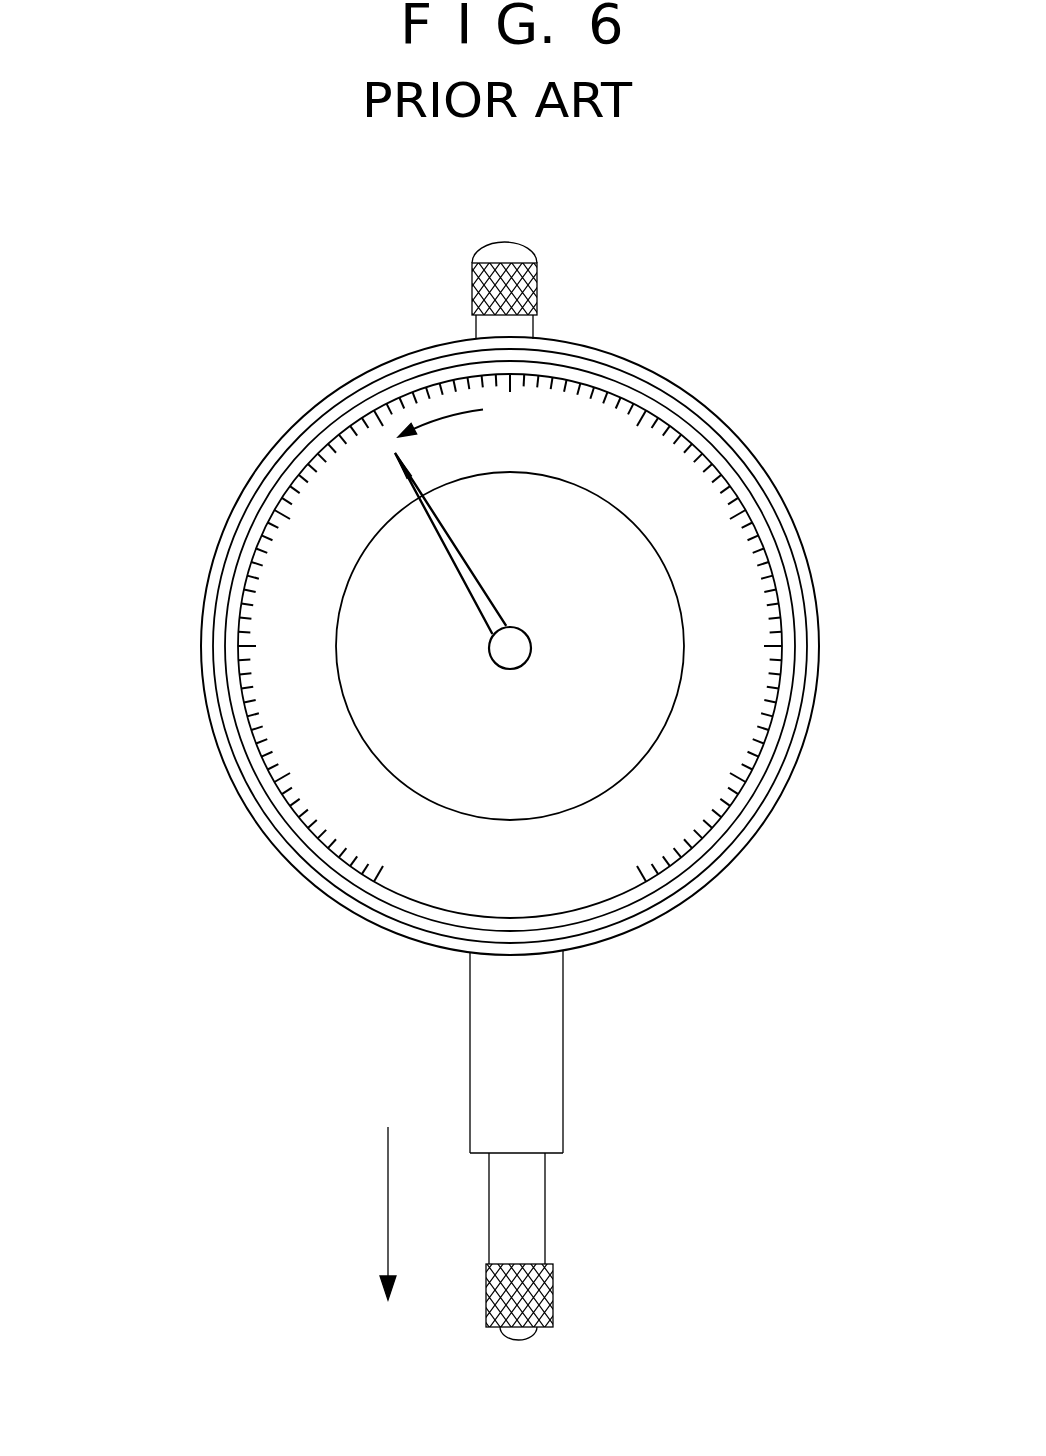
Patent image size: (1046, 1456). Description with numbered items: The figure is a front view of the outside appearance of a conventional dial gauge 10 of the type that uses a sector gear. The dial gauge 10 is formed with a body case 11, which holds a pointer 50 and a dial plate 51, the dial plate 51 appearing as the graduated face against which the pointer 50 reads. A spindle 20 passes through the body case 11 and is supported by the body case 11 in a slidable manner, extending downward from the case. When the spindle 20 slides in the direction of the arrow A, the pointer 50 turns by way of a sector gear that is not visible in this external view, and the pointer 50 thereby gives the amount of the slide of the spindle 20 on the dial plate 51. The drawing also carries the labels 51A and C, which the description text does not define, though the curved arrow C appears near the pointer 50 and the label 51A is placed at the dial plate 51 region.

The dial gauge 10 is at (492, 783).
The body case 11 is at (798, 542).
The spindle 20 is at (527, 1207).
The pointer 50 is at (462, 568).
The dial plate 51 is at (680, 478).
The dial face 51A is at (585, 892).
The pointer rotation direction arrow C is at (432, 412).
The arrow A is at (376, 1213).